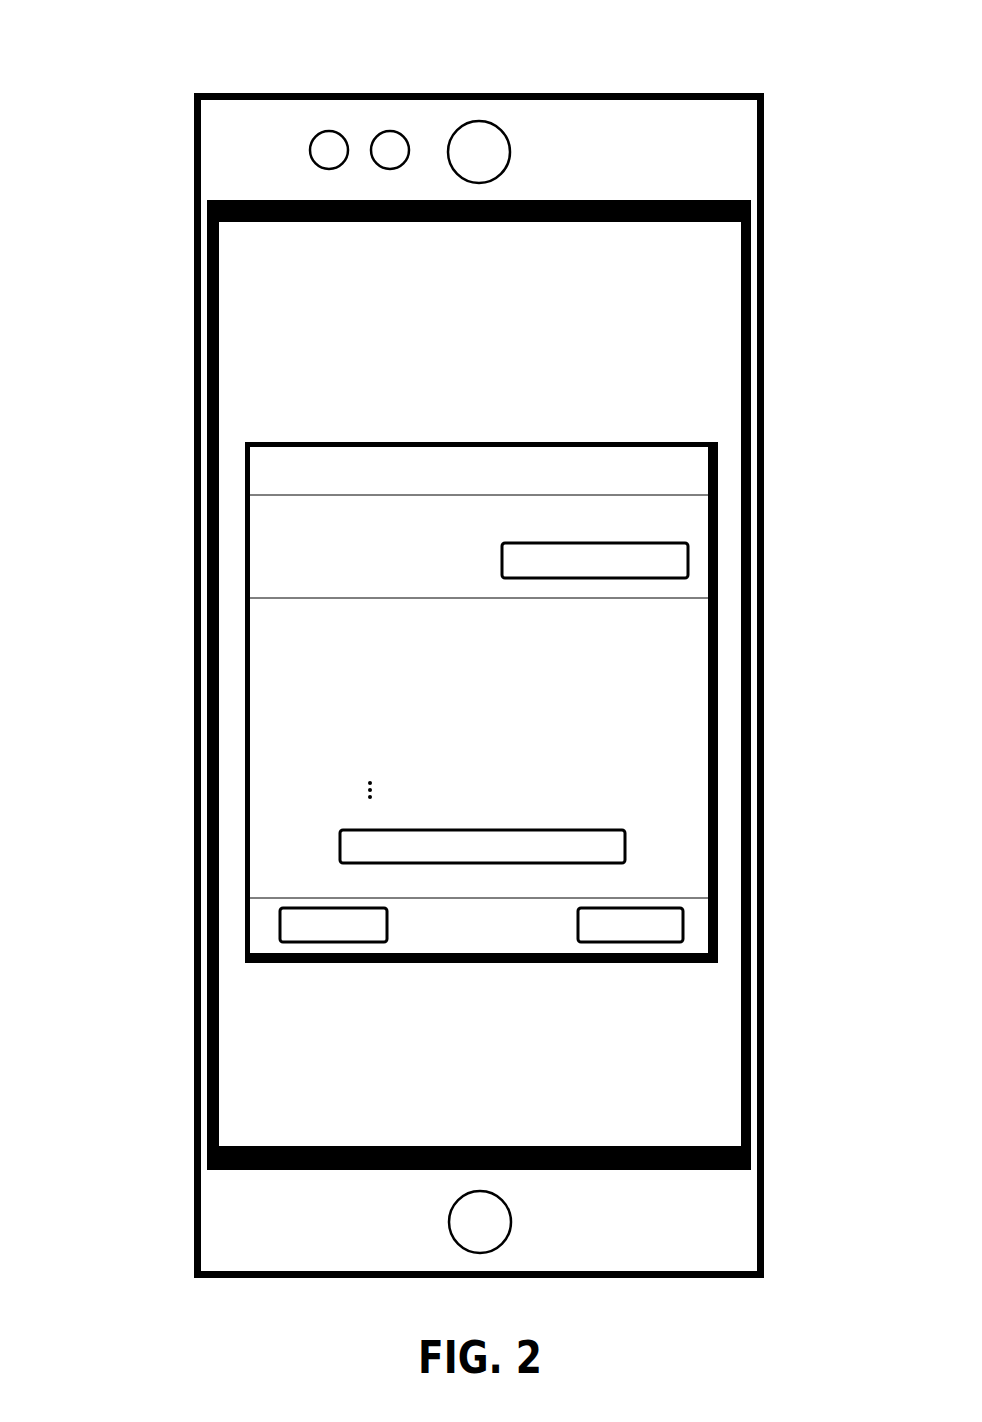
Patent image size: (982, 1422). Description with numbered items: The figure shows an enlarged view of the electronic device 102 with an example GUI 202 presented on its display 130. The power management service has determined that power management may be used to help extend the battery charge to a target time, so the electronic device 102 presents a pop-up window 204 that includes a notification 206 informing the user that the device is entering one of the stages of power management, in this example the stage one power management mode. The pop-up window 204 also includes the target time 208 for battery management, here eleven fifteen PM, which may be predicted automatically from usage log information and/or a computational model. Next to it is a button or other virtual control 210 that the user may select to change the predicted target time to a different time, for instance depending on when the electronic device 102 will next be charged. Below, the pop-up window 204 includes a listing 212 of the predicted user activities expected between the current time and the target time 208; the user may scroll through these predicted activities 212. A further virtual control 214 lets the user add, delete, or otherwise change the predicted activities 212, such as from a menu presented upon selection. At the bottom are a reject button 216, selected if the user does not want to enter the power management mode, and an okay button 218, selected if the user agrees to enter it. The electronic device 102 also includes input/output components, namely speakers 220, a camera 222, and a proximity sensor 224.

The electronic device 102 is at (118, 27).
The display 130 is at (752, 345).
The GUI 202 is at (235, 290).
The pop-up window 204 is at (490, 442).
The notification 206 is at (233, 457).
The target time 208 is at (235, 510).
The virtual control 210 is at (502, 562).
The listing of predicted user activities 212 is at (235, 603).
The virtual control 214 is at (340, 848).
The reject button 216 is at (337, 906).
The okay button 218 is at (637, 906).
The speakers 220 is at (492, 122).
The camera 222 is at (396, 132).
The proximity sensor 224 is at (335, 132).